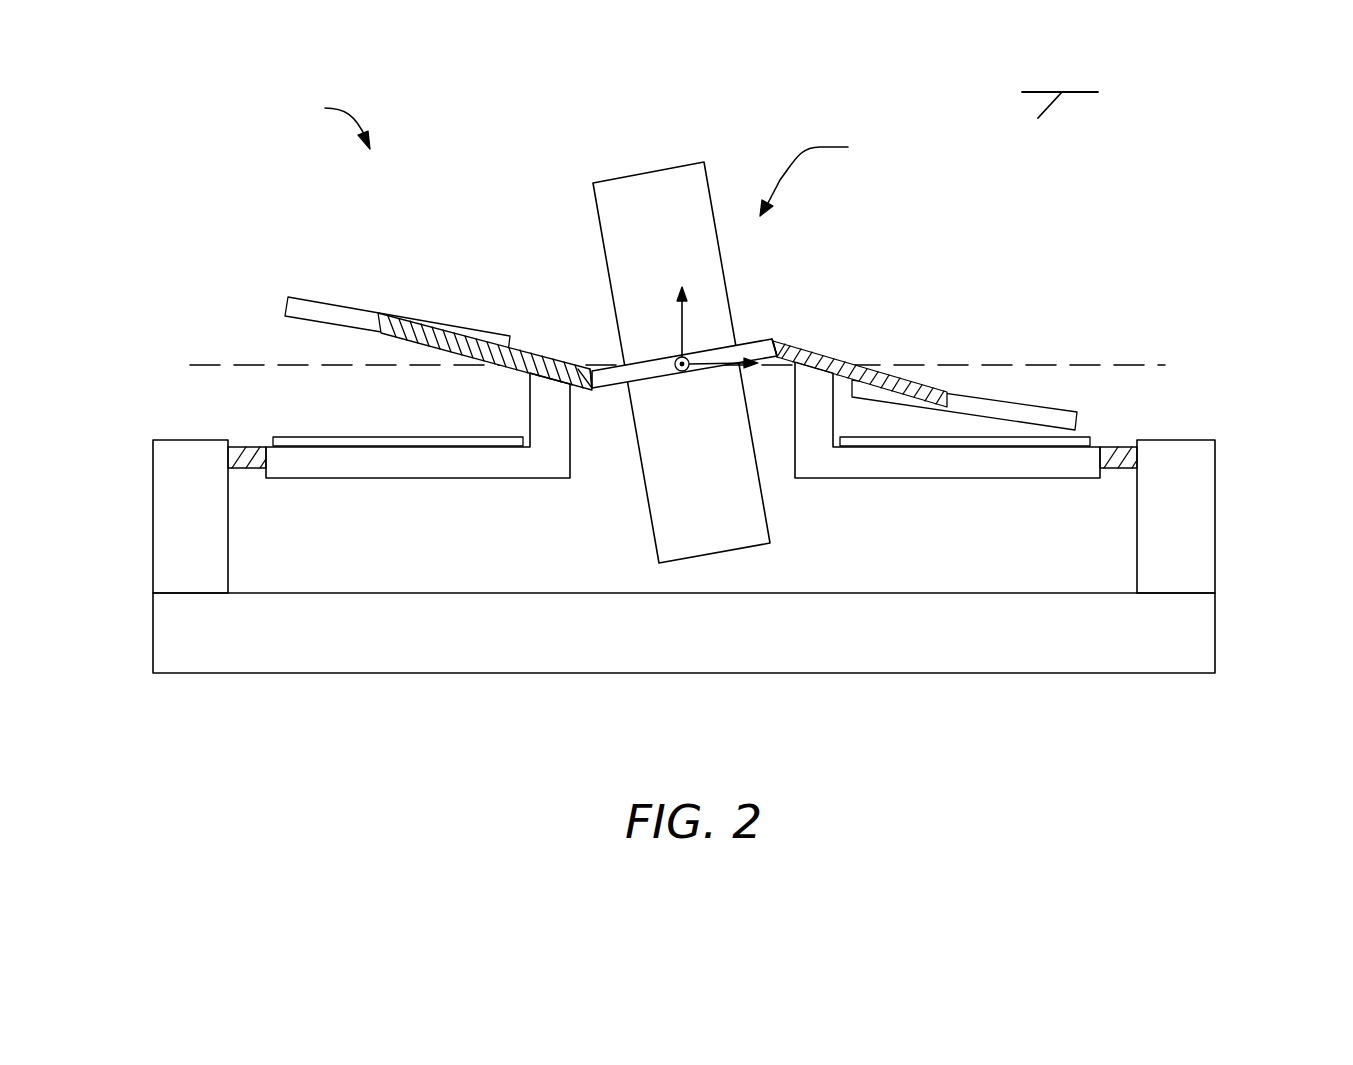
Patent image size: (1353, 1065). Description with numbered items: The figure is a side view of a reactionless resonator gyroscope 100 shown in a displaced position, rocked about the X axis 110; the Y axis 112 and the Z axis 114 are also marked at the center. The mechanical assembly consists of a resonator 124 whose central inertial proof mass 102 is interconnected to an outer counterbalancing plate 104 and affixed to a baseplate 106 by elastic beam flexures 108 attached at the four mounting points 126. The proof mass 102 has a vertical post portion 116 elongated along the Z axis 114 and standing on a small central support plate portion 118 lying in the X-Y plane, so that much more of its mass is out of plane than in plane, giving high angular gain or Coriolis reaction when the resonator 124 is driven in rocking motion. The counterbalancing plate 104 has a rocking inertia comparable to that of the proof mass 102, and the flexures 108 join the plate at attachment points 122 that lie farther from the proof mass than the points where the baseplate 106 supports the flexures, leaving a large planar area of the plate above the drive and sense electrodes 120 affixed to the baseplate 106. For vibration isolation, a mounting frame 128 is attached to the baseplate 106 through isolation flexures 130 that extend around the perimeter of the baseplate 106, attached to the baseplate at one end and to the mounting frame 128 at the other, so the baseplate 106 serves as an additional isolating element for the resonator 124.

The reactionless resonator gyroscope 100 is at (1060, 87).
The inertial proof mass 102 is at (825, 177).
The counterbalancing plate 104 is at (286, 308).
The baseplate 106 is at (452, 480).
The flexures 108 is at (548, 373).
The X axis 110 is at (652, 390).
The Y axis 112 is at (721, 400).
The Z axis 114 is at (650, 292).
The post portion 116 is at (645, 170).
The support plate portion 118 is at (758, 340).
The electrodes 120 is at (288, 435).
The attachment points 122 is at (380, 320).
The resonator 124 is at (327, 124).
The mounting points 126 is at (565, 385).
The mounting frame 128 is at (153, 505).
The isolation flexures 130 is at (240, 450).